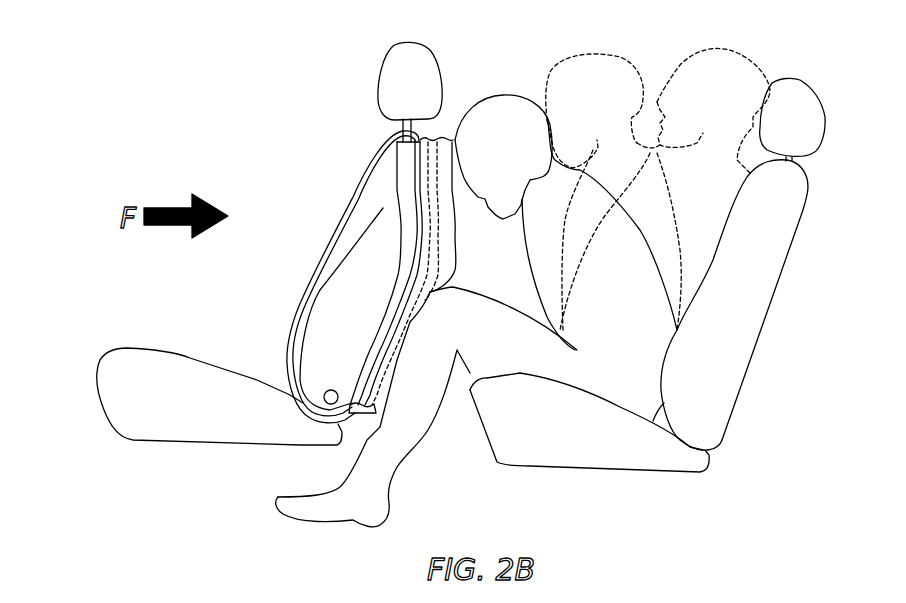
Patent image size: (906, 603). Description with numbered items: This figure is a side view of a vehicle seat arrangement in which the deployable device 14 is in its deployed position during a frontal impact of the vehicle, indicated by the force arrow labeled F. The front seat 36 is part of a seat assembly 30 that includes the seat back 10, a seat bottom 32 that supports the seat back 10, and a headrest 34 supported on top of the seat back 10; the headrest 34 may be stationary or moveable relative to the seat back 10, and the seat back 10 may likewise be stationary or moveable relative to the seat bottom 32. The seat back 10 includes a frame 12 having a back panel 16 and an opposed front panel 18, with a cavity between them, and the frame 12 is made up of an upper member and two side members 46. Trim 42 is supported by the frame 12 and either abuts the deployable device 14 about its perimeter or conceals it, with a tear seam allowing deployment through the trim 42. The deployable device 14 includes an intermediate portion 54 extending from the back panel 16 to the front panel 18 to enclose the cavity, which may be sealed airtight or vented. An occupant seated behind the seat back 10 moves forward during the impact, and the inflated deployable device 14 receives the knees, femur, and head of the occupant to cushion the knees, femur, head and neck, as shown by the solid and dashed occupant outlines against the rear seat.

The seat back 10 is at (320, 132).
The frame 12 is at (383, 208).
The deployable device 14 is at (463, 238).
The back panel 16 is at (398, 256).
The front panel 18 is at (445, 258).
The seat assembly 30 is at (201, 452).
The seat bottom 32 is at (192, 360).
The headrest 34 is at (420, 73).
The front seat 36 is at (350, 86).
The trim 42 is at (328, 258).
The side members 46 is at (317, 312).
The intermediate portion 54 is at (366, 408).